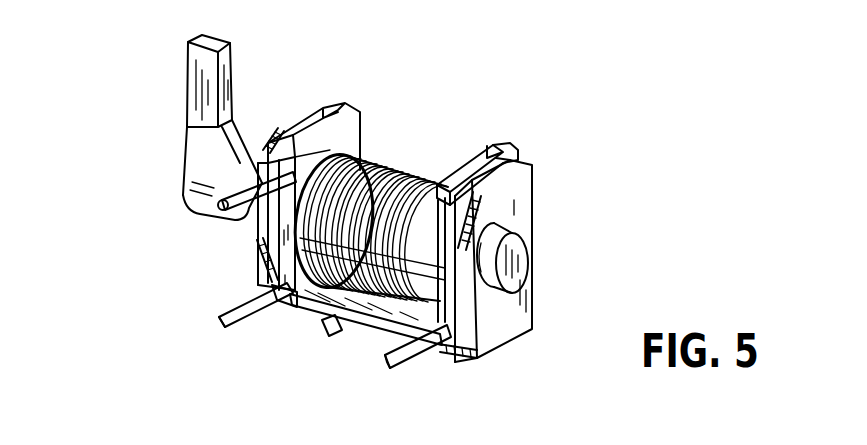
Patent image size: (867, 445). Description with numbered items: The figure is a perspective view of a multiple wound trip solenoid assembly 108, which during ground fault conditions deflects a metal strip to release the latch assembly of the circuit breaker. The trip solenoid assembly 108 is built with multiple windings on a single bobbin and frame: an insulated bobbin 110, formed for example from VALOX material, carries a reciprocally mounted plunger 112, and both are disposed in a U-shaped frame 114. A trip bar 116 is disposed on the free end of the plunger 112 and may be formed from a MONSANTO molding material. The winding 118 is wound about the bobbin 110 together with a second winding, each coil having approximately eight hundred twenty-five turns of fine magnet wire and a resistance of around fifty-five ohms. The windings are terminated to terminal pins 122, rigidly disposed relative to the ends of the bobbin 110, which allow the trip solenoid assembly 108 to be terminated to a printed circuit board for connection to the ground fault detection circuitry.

The trip solenoid assembly 108 is at (555, 189).
The insulated bobbin 110 is at (488, 147).
The plunger 112 is at (528, 270).
The U-shaped frame 114 is at (488, 322).
The trip bar 116 is at (190, 84).
The winding 118 is at (373, 162).
The terminal pins 122 is at (237, 220).